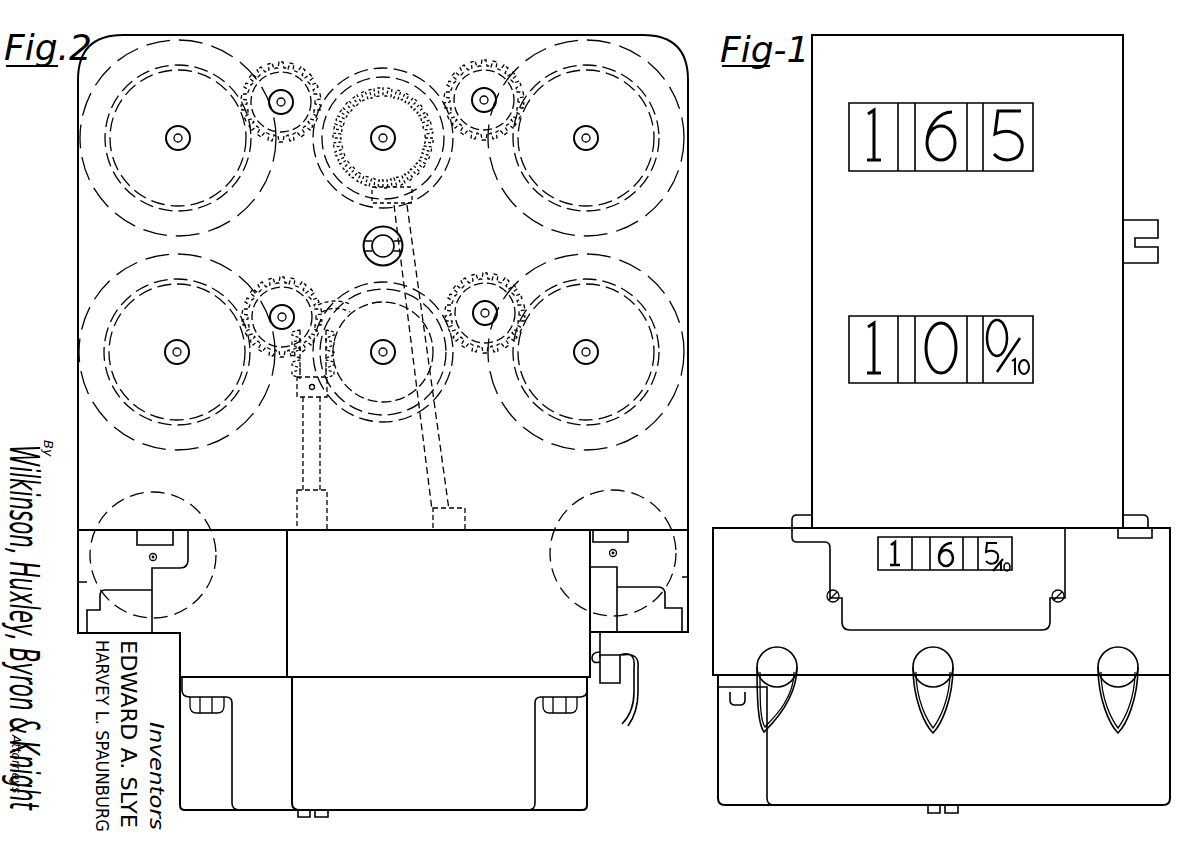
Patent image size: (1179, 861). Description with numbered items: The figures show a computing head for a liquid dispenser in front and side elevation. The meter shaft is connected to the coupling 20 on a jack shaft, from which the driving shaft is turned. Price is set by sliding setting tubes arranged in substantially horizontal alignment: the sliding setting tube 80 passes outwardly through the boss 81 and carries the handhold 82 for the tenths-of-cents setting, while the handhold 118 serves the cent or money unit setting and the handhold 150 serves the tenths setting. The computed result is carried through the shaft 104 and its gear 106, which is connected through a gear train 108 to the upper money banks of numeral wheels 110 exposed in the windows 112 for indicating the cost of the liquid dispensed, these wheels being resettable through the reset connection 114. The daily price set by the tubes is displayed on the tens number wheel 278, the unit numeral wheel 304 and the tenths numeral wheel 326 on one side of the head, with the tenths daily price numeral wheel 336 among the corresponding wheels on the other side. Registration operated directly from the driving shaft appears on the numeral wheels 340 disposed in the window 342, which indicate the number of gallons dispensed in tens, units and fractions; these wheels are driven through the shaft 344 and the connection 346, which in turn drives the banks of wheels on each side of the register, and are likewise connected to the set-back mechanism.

In FIG. 2, the coupling 20 is at (330, 810).
In FIG. 1, the coupling 20 is at (953, 805).
In FIG. 2, the sliding setting tube 80 is at (608, 675).
In FIG. 2, the boss 81 is at (606, 648).
In FIG. 2, the handhold 82 is at (632, 722).
In FIG. 1, the handhold 82 is at (779, 712).
In FIG. 2, the shaft 104 is at (446, 468).
In FIG. 2, the gear 106 is at (414, 195).
In FIG. 2, the gear train 108 is at (406, 118).
In FIG. 2, the numeral wheels 110 is at (80, 140).
In FIG. 1, the numeral wheels 110 is at (985, 110).
In FIG. 1, the windows 112 is at (1034, 112).
In FIG. 2, the reset connection 114 is at (403, 251).
In FIG. 1, the reset connection 114 is at (1140, 220).
In FIG. 1, the handhold 118 is at (929, 720).
In FIG. 1, the handhold 150 is at (1119, 722).
In FIG. 2, the tens number wheel 278 is at (667, 520).
In FIG. 1, the tens number wheel 278 is at (897, 540).
In FIG. 1, the unit numeral wheel 304 is at (947, 540).
In FIG. 1, the tenths numeral wheel 326 is at (1000, 540).
In FIG. 2, the tenths daily price numeral wheel 336 is at (198, 514).
In FIG. 2, the numeral wheels 340 is at (80, 351).
In FIG. 1, the numeral wheels 340 is at (987, 320).
In FIG. 1, the window 342 is at (1034, 335).
In FIG. 2, the shaft 344 is at (312, 472).
In FIG. 2, the connection 346 is at (349, 300).